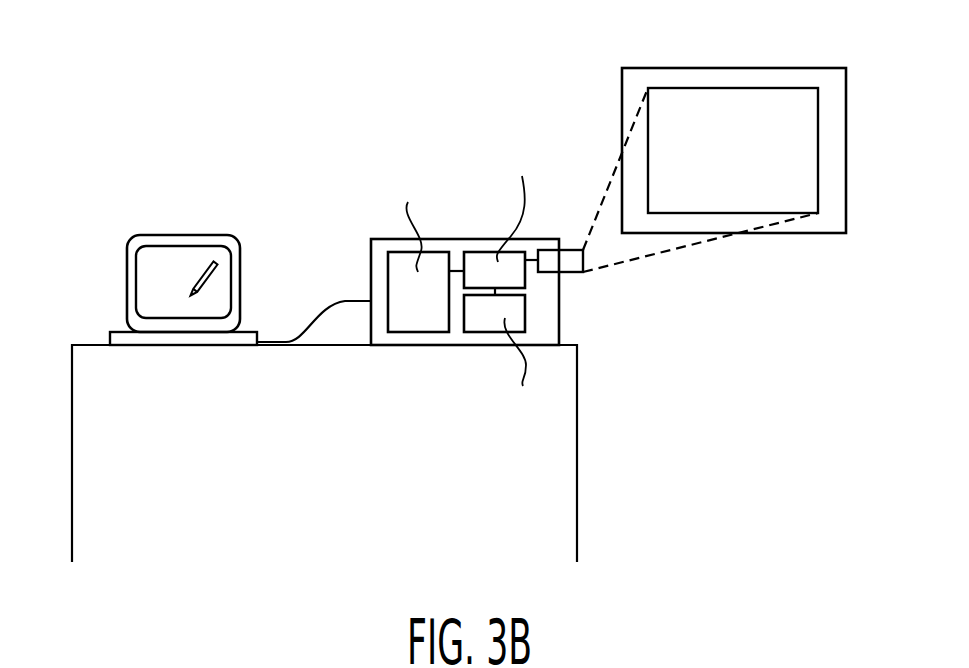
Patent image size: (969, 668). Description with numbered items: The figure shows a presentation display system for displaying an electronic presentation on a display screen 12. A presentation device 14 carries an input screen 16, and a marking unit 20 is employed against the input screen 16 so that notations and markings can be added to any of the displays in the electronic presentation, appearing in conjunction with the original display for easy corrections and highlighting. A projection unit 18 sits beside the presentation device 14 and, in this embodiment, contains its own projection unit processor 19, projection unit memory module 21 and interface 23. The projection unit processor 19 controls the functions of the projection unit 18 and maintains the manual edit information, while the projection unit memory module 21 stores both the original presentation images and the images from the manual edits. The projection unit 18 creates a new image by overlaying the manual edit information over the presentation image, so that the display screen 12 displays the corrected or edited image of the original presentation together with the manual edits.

The display screen 12 is at (713, 68).
The presentation device 14 is at (110, 340).
The input screen 16 is at (157, 256).
The projection unit 18 is at (371, 257).
The projection unit processor 19 is at (493, 280).
The marking unit 20 is at (207, 283).
The projection unit memory module 21 is at (493, 325).
The interface 23 is at (427, 311).